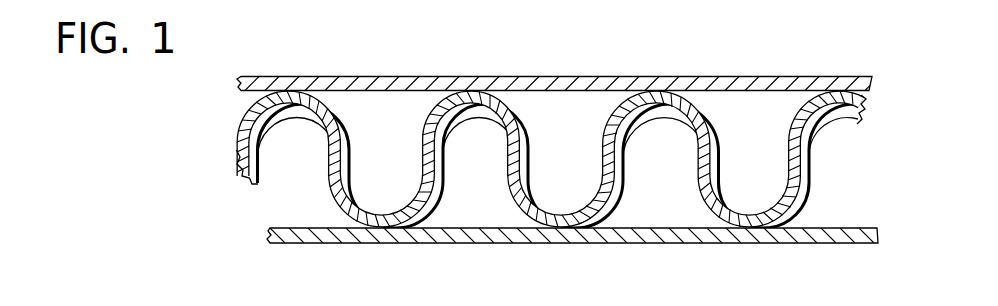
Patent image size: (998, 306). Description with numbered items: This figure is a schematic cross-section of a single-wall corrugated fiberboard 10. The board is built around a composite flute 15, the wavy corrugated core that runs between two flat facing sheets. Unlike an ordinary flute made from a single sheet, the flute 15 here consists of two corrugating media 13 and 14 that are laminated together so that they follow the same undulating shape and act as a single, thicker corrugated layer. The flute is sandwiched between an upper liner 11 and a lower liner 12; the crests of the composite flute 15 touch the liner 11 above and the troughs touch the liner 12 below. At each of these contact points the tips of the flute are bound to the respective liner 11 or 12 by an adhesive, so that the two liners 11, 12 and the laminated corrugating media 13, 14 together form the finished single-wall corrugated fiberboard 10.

The single-wall corrugated fiberboard 10 is at (564, 163).
The liner 11 is at (553, 82).
The liner 12 is at (512, 238).
The corrugating medium 13 is at (430, 124).
The corrugating medium 14 is at (438, 192).
The flute 15 is at (825, 147).